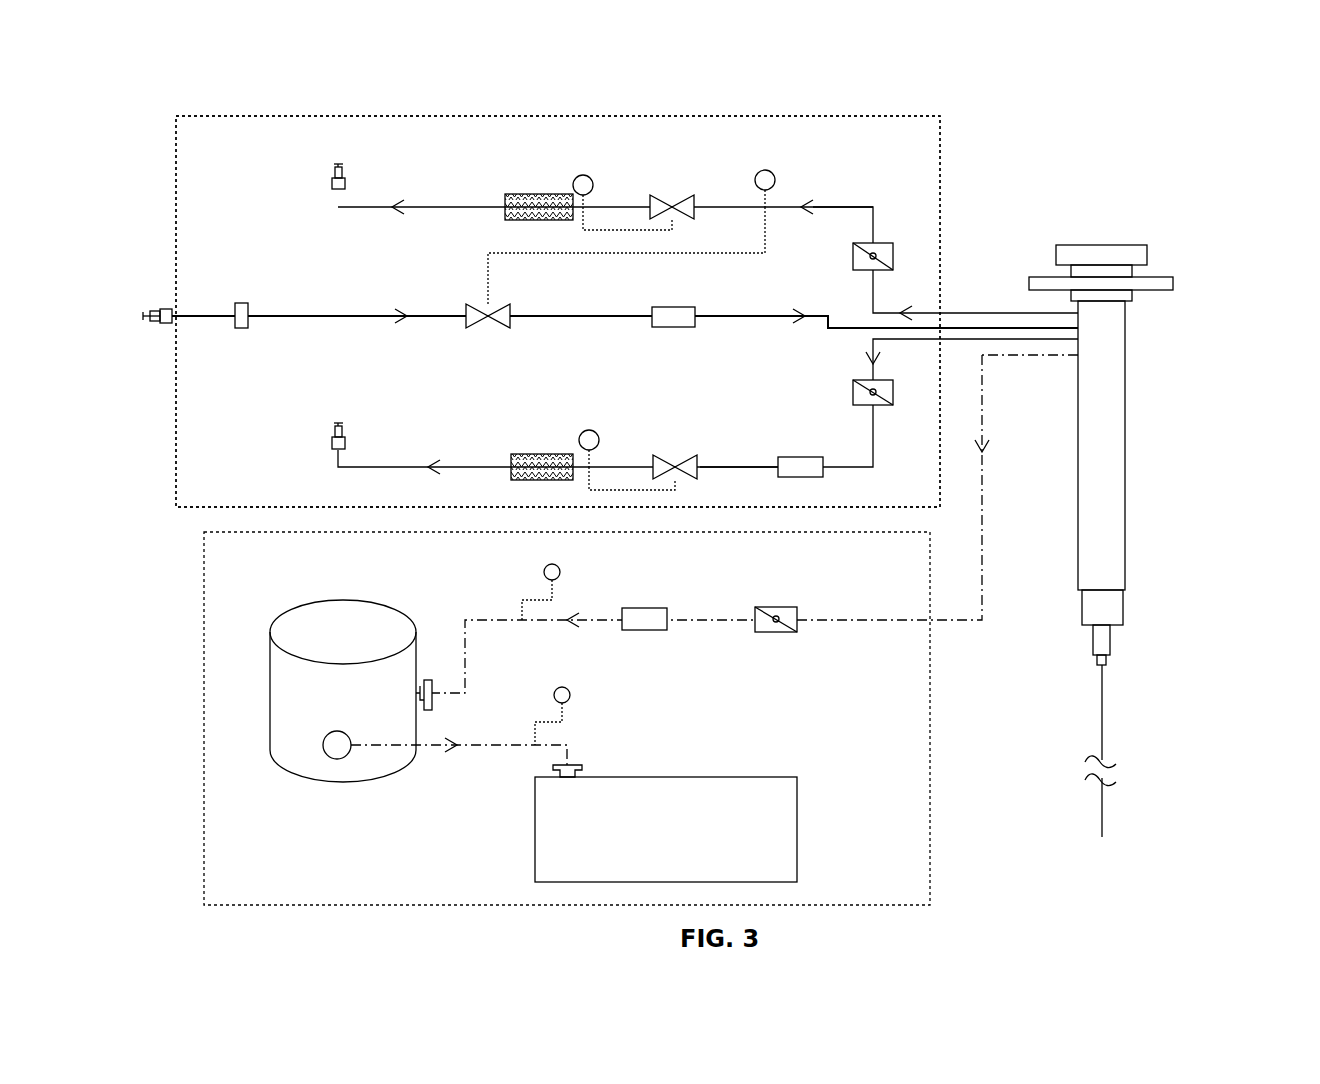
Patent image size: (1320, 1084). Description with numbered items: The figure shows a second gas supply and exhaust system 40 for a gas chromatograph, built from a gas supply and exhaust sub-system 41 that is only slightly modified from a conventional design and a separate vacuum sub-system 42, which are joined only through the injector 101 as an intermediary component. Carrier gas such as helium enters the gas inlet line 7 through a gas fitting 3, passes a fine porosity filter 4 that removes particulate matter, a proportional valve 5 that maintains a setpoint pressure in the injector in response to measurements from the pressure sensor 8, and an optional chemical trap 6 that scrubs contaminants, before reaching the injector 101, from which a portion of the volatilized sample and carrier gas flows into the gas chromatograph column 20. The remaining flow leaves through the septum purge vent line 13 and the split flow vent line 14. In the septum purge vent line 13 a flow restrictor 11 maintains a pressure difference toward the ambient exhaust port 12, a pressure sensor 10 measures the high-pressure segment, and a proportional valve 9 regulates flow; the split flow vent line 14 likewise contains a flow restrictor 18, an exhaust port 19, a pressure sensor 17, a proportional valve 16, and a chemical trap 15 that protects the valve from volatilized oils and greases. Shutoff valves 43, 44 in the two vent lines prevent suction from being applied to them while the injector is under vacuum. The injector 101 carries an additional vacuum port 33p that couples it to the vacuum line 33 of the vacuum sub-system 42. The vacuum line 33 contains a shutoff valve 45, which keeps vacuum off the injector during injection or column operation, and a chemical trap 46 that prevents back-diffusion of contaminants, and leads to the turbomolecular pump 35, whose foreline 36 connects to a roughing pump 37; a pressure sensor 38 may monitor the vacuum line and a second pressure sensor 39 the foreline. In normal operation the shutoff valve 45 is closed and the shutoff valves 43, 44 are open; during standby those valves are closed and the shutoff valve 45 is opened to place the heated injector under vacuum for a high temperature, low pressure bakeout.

The gas fitting 3 is at (162, 308).
The fine porosity filter 4 is at (248, 308).
The proportional valve 5 is at (483, 338).
The chemical trap 6 is at (675, 327).
The gas inlet line 7 is at (770, 316).
The pressure sensor 8 is at (772, 172).
The proportional valve 9 is at (677, 194).
The pressure sensor 10 is at (588, 178).
The flow restrictor 11 is at (533, 195).
The exhaust port 12 is at (330, 179).
The septum purge vent line 13 is at (830, 207).
The split flow vent line 14 is at (738, 467).
The chemical trap 15 is at (797, 457).
The proportional valve 16 is at (670, 448).
The pressure sensor 17 is at (594, 432).
The flow restrictor 18 is at (540, 455).
The exhaust port 19 is at (330, 440).
The gas chromatograph column 20 is at (1105, 725).
The vacuum line 33 is at (862, 620).
The vacuum port 33p is at (1078, 355).
The turbomolecular pump 35 is at (268, 600).
The foreline 36 is at (488, 745).
The roughing pump 37 is at (697, 765).
The pressure sensor 38 is at (560, 570).
The pressure sensor 39 is at (566, 688).
The system 40 is at (270, 84).
The gas supply and exhaust sub-system 41 is at (940, 190).
The vacuum sub-system 42 is at (930, 715).
The shutoff valve 43 is at (852, 255).
The shutoff valve 44 is at (852, 388).
The shutoff valve 45 is at (770, 606).
The chemical trap 46 is at (650, 608).
The injector 101 is at (1158, 332).